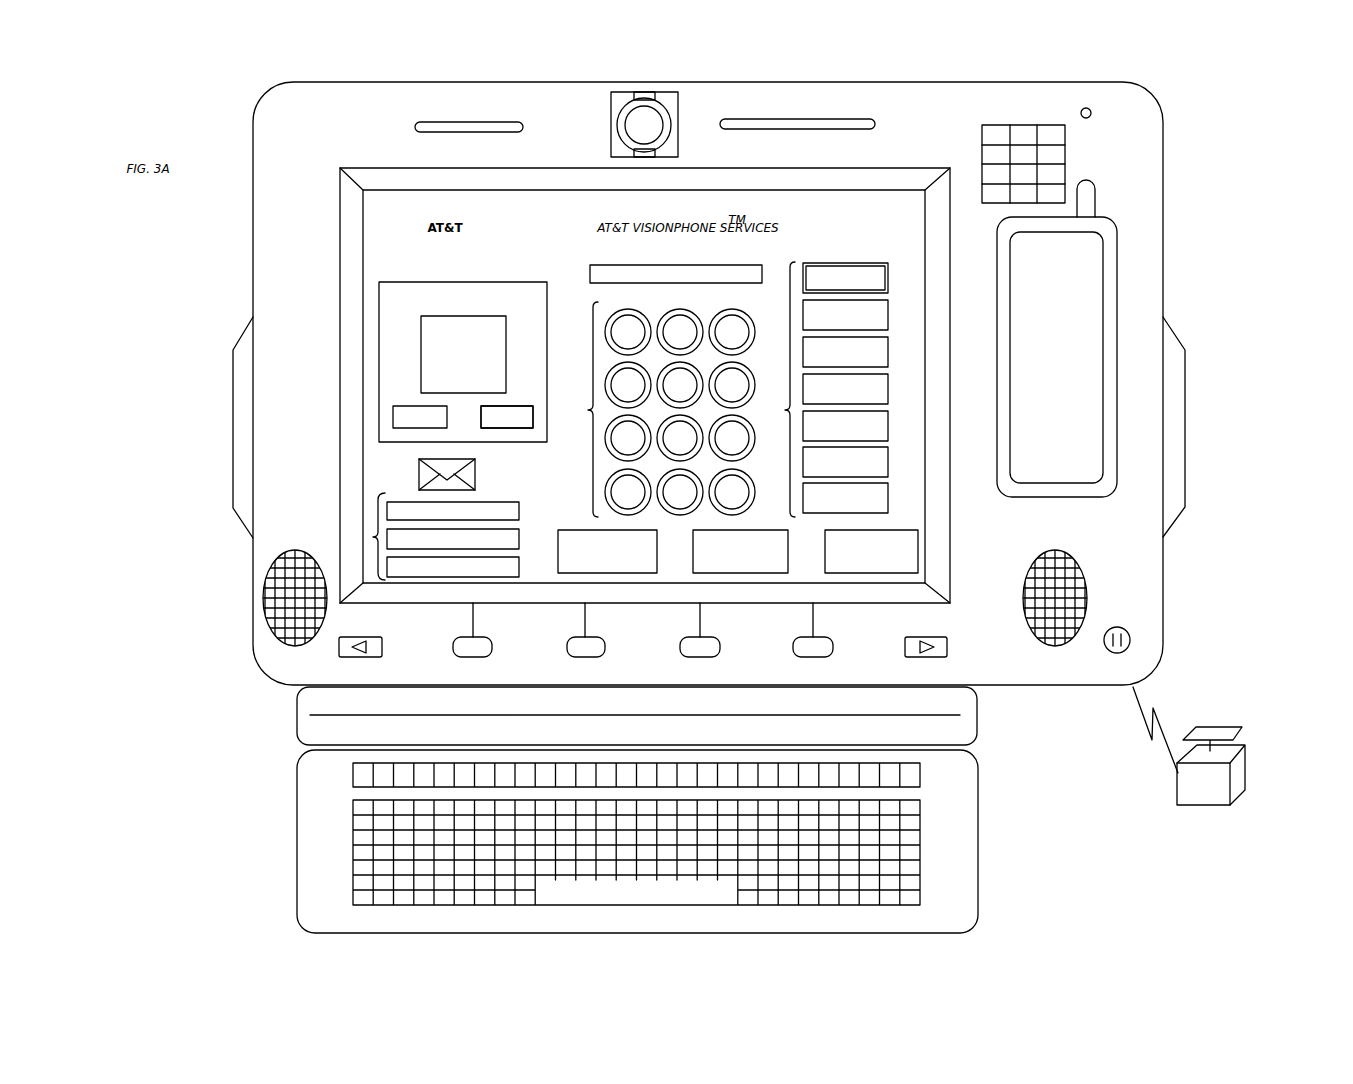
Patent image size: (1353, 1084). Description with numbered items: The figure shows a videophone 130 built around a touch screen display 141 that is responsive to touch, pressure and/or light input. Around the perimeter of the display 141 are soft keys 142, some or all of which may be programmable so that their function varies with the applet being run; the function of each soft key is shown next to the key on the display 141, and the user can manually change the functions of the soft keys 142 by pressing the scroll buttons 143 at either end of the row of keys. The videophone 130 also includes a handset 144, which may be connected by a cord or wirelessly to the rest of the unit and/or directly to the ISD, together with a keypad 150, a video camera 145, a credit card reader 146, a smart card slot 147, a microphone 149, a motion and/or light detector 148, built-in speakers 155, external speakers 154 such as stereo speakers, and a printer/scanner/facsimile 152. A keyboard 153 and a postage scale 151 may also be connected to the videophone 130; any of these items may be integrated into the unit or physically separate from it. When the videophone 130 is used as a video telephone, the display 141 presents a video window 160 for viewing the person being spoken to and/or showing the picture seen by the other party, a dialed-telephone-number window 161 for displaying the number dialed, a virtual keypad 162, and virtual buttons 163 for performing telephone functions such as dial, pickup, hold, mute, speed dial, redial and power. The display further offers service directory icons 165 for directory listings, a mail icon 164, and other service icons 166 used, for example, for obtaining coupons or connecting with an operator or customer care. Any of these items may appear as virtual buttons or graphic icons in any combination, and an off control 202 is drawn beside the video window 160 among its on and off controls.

The videophone 130 is at (1178, 101).
The touch screen display 141 is at (348, 308).
The soft keys 142 is at (492, 647).
The scroll buttons 143 is at (382, 647).
The handset 144 is at (1040, 359).
The video camera 145 is at (611, 97).
The credit card reader 146 is at (402, 151).
The smart card slot 147 is at (876, 121).
The motion and/or light detector 148 is at (1092, 113).
The microphone 149 is at (1117, 627).
The keypad 150 is at (982, 160).
The postage scale 151 is at (1177, 790).
The printer/scanner/facsimile 152 is at (977, 712).
The keyboard 153 is at (978, 840).
The external speakers 154 is at (1218, 373).
The built-in speaker 155 is at (262, 620).
The video window 160 is at (523, 295).
The dialed-telephone-number window 161 is at (692, 278).
The virtual keypad 162 is at (654, 409).
The virtual buttons 163 is at (821, 389).
The mail icon 164 is at (478, 476).
The service directory icons 165 is at (375, 540).
The service icons 166 is at (566, 530).
The off button 202 is at (530, 428).